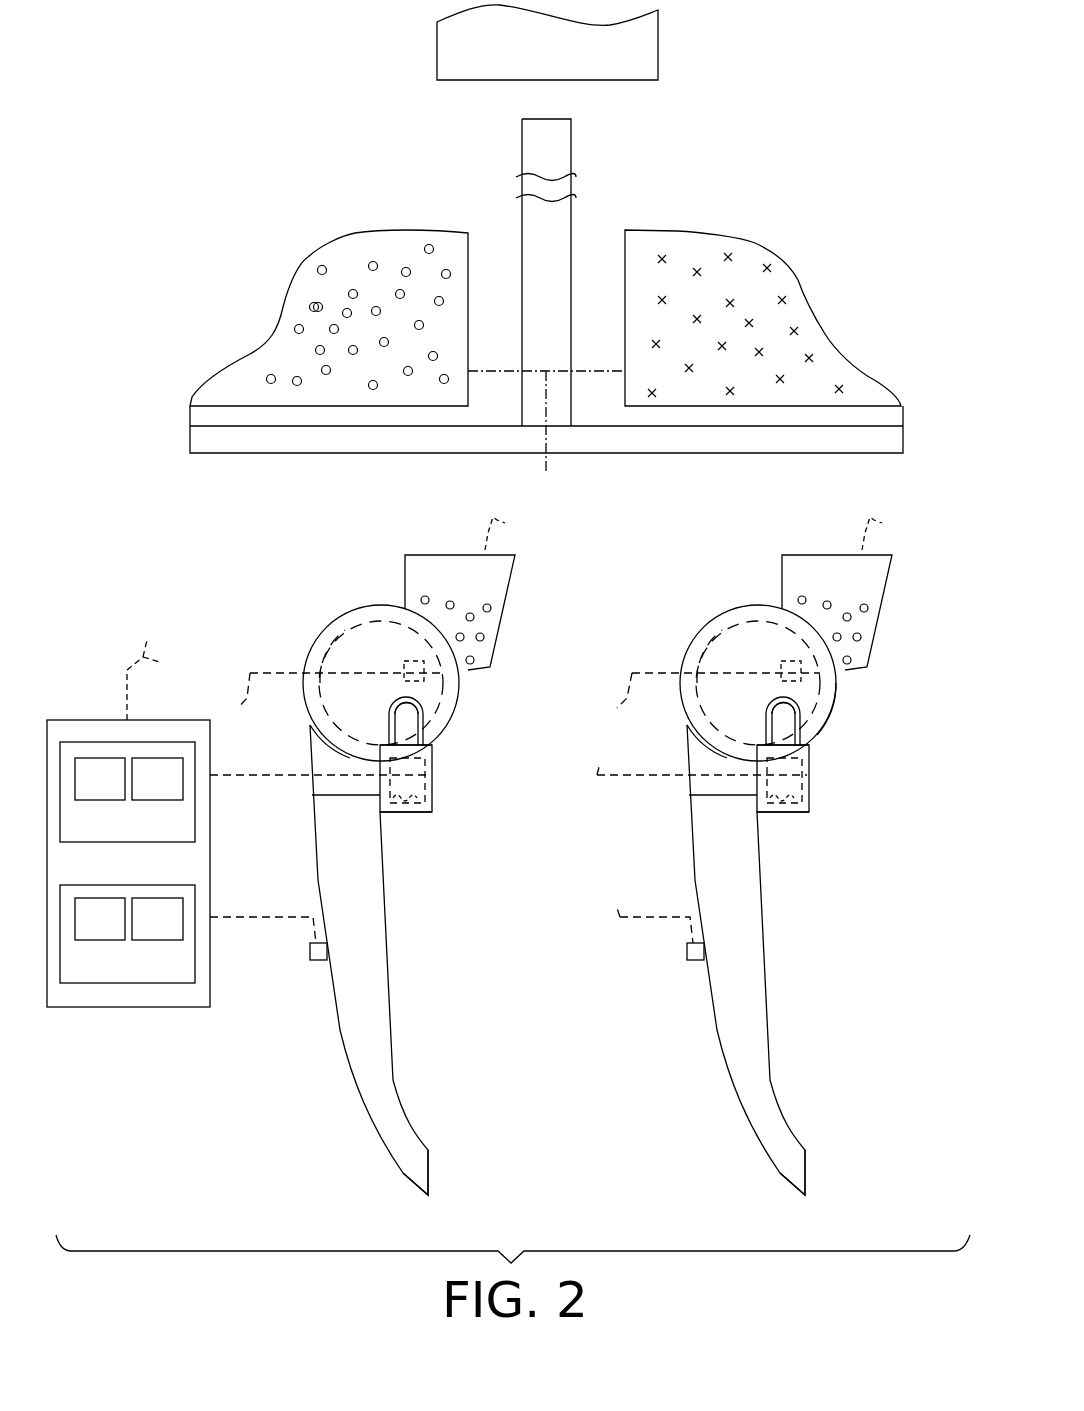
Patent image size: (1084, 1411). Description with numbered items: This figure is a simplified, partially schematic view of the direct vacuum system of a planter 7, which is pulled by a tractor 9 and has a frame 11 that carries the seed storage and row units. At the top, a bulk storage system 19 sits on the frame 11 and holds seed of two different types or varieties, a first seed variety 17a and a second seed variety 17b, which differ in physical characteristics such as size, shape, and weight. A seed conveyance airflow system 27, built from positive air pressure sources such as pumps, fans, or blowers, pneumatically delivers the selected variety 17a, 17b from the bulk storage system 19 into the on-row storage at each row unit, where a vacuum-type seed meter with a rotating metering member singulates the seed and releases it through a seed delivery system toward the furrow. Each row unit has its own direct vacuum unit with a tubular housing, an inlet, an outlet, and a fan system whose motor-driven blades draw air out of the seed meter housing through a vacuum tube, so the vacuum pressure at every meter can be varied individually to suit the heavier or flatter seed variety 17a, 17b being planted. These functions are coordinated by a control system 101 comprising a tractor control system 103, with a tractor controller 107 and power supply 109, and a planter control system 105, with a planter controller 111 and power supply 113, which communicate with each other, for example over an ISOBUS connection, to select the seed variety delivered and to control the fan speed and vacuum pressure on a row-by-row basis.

The planter 7 is at (790, 318).
The tractor 9 is at (669, 50).
The frame 11 is at (881, 447).
The first seed variety 17a is at (318, 305).
The second seed variety 17b is at (796, 331).
The bulk storage system 19 is at (513, 291).
The seed conveyance airflow system 27 is at (534, 466).
The control system 101 is at (123, 822).
The tractor control system 103 is at (127, 792).
The planter control system 105 is at (127, 934).
The tractor controller 107 is at (100, 779).
The power supply 109 is at (157, 779).
The planter controller 111 is at (100, 919).
The power supply 113 is at (157, 919).